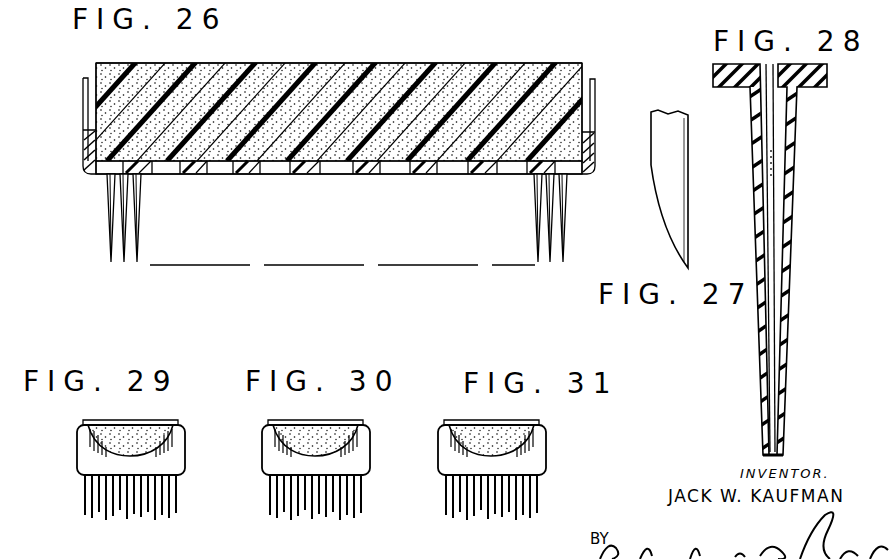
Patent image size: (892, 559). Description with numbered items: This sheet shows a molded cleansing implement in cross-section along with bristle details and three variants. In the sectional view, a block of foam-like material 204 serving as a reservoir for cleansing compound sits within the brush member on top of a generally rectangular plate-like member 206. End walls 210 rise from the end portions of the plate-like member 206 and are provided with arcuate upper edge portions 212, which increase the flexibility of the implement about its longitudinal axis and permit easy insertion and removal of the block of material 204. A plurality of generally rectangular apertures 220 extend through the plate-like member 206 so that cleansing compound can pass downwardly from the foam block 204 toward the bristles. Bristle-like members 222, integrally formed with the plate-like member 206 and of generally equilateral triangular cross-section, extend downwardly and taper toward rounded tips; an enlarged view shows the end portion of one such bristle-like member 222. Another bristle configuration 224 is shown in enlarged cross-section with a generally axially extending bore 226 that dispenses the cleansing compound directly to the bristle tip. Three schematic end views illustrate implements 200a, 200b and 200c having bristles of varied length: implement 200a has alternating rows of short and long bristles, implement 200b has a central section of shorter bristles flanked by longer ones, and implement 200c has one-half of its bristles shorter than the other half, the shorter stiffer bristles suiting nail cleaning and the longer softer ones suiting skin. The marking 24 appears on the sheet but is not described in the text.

In FIG. 26, the section line marker 24 is at (722, 0).
In FIG. 26, the block of foam-like material 204 is at (532, 66).
In FIG. 26, the plate-like member 206 is at (425, 175).
In FIG. 26, the end walls 210 is at (83, 152).
In FIG. 26, the arcuate upper edge portions 212 is at (84, 136).
In FIG. 26, the apertures 220 is at (277, 175).
In FIG. 26, the bristle-like members 222 is at (143, 217).
In FIG. 27, the bristle-like members 222 is at (663, 226).
In FIG. 28, the bristle 224 is at (800, 282).
In FIG. 28, the bore 226 is at (783, 166).
In FIG. 29, the implement 200a is at (192, 464).
In FIG. 30, the implement 200b is at (378, 476).
In FIG. 31, the implement 200c is at (550, 443).